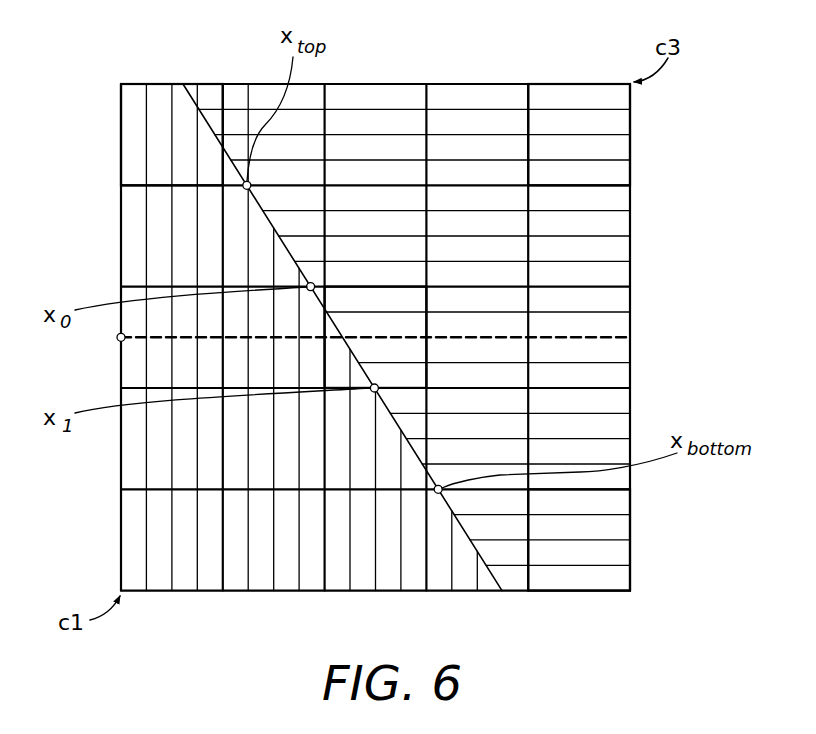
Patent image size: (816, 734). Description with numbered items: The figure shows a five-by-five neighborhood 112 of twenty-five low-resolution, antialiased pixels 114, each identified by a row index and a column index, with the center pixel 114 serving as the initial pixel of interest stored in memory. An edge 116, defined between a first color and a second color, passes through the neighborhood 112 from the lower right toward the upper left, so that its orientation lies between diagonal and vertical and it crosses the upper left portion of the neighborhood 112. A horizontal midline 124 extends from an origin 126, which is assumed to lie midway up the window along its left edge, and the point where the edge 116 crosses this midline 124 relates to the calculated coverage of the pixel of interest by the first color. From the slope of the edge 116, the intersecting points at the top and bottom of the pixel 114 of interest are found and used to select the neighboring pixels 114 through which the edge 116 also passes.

The neighborhood 112 is at (485, 61).
The pixel 114 is at (677, 513).
The edge 116 is at (188, 94).
The horizontal midline 124 is at (613, 336).
The origin 126 is at (117, 338).